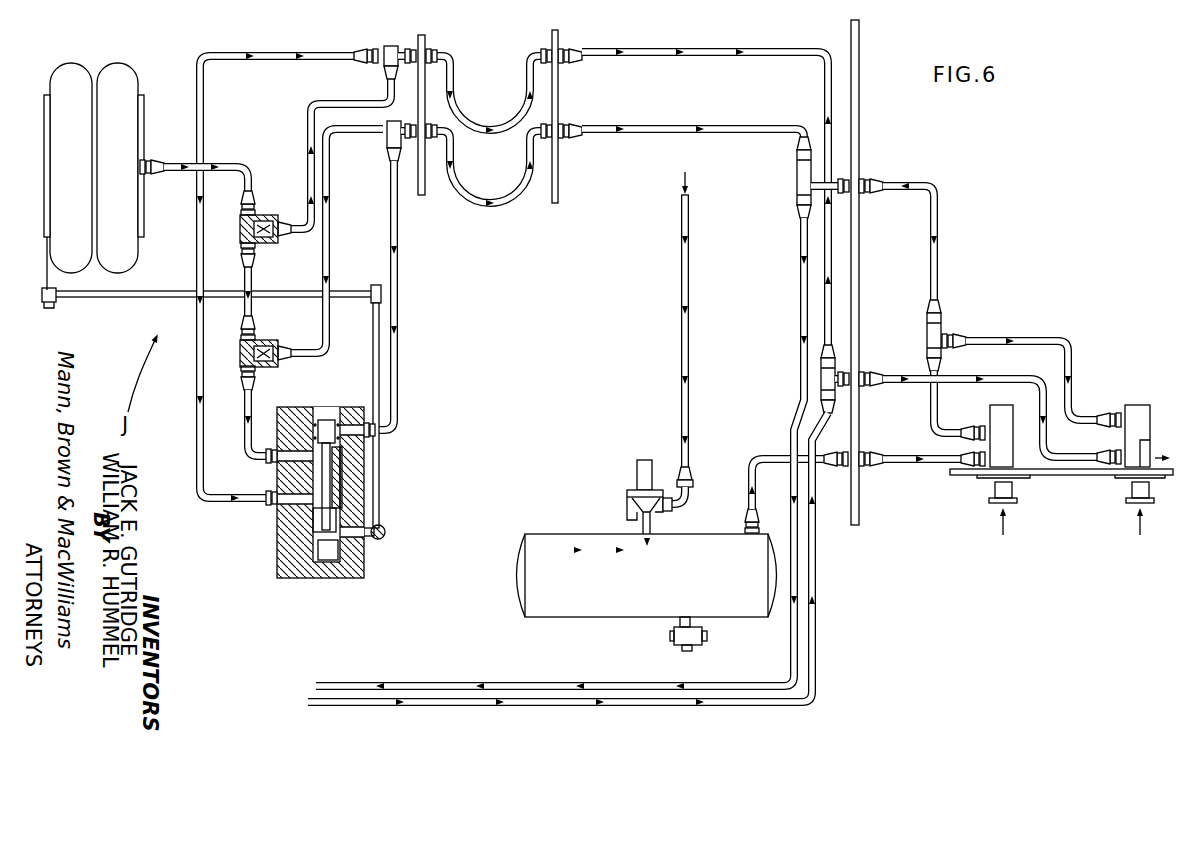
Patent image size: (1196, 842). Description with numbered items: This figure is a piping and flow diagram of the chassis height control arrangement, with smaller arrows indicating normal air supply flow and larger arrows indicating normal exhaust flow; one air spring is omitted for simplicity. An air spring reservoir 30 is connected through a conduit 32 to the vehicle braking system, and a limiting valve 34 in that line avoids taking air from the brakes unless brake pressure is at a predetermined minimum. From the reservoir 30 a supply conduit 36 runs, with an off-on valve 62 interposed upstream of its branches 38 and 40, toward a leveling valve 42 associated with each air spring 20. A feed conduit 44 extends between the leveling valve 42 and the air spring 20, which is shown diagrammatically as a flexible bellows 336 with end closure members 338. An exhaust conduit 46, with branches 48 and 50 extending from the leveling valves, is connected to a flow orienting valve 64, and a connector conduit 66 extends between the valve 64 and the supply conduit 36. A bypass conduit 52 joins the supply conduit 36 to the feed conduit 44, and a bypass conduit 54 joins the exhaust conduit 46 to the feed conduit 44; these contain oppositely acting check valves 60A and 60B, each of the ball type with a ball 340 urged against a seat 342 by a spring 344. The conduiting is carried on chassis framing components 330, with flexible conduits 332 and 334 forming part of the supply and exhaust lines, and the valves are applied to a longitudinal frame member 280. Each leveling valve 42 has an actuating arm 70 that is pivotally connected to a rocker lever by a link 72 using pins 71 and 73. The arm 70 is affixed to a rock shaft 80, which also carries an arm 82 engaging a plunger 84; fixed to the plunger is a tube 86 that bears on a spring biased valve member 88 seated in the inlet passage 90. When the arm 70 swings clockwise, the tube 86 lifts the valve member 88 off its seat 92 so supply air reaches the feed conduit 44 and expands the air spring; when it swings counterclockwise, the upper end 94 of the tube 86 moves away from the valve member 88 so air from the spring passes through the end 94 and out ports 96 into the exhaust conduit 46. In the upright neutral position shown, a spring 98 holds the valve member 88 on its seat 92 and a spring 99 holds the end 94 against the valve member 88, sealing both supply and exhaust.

The air spring 20 is at (102, 161).
The air spring reservoir 30 is at (552, 548).
The conduit 32 is at (689, 300).
The limiting valve 34 is at (640, 456).
The supply conduit 36 is at (948, 230).
The branch 38 is at (742, 128).
The branch 40 is at (437, 684).
The leveling valve 42 is at (341, 516).
The feed conduit 44 is at (233, 165).
The exhaust conduit 46 is at (985, 374).
The branch 48 is at (633, 704).
The branch 50 is at (742, 51).
The bypass conduit 52 is at (329, 247).
The bypass conduit 54 is at (346, 104).
The check valve 60A is at (268, 212).
The check valve 60B is at (281, 346).
The off-on valve 62 is at (985, 505).
The flow orienting valve 64 is at (1135, 402).
The connector conduit 66 is at (1060, 340).
The actuating leveling valve arm 70 is at (399, 350).
The pin 71 is at (384, 290).
The link 72 is at (349, 293).
The pin 73 is at (46, 298).
The rock shaft 80 is at (386, 526).
The arm 82 is at (381, 540).
The plunger 84 is at (320, 527).
The tube 86 is at (365, 465).
The spring biased valve member 88 is at (370, 454).
The inlet passage 90 is at (339, 428).
The seat 92 is at (291, 452).
The upper end 94 is at (316, 487).
The ports 96 is at (318, 502).
The spring 98 is at (318, 416).
The spring 99 is at (348, 579).
The longitudinal member 280 is at (1082, 477).
The chassis framing component 330 is at (425, 186).
The flexible conduit 332 is at (497, 209).
The flexible conduit 334 is at (498, 128).
The bellows 336 is at (72, 86).
The end closure member 338 is at (44, 136).
The ball 340 is at (270, 232).
The seat 342 is at (272, 244).
The spring 344 is at (252, 190).